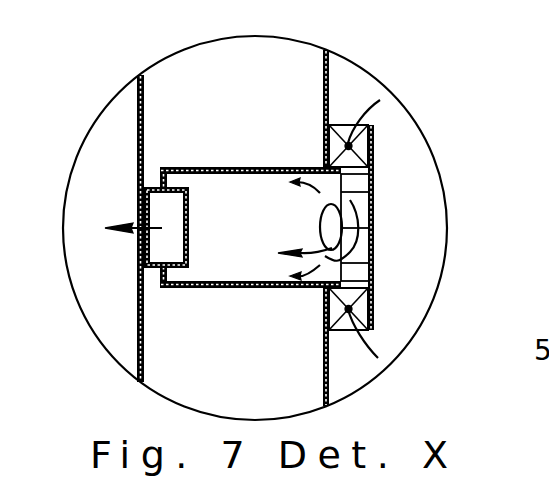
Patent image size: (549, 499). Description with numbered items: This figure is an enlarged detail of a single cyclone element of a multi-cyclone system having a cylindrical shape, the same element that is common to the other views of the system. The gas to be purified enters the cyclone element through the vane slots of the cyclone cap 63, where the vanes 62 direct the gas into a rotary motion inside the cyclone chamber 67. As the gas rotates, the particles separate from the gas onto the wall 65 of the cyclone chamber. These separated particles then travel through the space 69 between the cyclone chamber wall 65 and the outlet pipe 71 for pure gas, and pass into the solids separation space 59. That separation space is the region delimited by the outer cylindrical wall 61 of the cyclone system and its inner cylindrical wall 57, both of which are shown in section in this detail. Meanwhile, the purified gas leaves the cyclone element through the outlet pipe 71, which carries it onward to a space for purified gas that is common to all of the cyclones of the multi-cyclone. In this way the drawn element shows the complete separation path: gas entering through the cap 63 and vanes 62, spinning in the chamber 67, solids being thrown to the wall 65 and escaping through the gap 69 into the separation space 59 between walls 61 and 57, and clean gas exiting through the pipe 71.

The inner cylindrical wall 57 is at (137, 107).
The solids separation space 59 is at (198, 72).
The outer cylindrical wall 61 is at (329, 78).
The vanes 62 is at (373, 143).
The cyclone cap 63 is at (373, 182).
The wall of the cyclone chamber 65 is at (275, 287).
The cyclone chamber 67 is at (322, 166).
The space between the cyclone chamber wall and the outlet pipe 69 is at (172, 273).
The outlet pipe for pure gas 71 is at (137, 263).